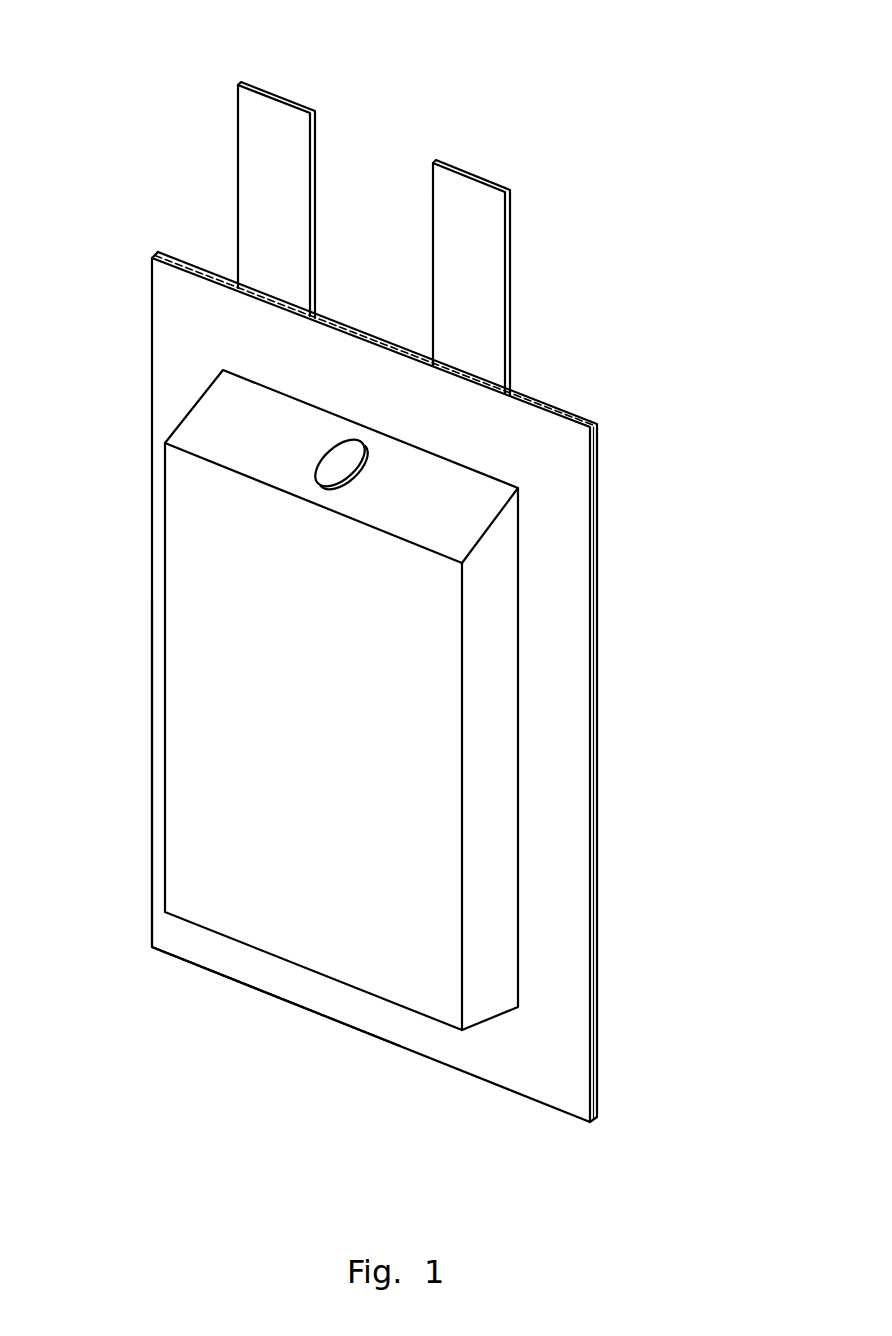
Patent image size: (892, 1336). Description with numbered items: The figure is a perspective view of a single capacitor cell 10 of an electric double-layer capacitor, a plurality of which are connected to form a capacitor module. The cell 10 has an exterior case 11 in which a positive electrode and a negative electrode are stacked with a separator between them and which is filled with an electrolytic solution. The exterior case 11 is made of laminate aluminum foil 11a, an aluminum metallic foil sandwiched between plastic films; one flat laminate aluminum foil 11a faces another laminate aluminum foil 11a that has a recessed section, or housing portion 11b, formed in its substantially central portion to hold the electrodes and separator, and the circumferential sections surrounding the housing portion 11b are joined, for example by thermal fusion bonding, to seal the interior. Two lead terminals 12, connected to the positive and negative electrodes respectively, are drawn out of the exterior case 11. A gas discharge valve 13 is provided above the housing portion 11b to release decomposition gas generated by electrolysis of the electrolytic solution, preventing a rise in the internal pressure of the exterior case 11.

The capacitor cell 10 is at (424, 108).
The exterior case 11 is at (557, 407).
The laminate aluminum foil 11a is at (563, 543).
The recessed section (housing portion) 11b is at (212, 885).
The lead terminal 12 is at (273, 117).
The gas discharge valve 13 is at (338, 461).